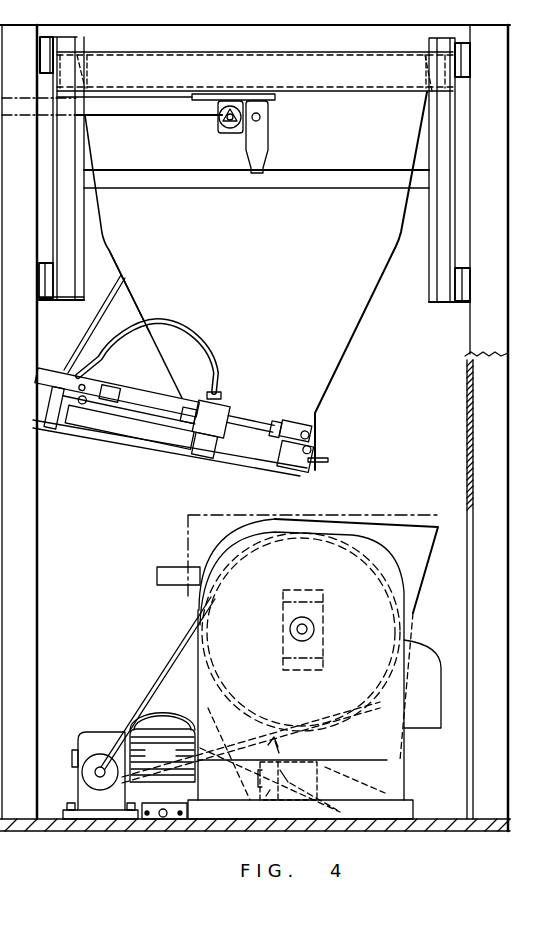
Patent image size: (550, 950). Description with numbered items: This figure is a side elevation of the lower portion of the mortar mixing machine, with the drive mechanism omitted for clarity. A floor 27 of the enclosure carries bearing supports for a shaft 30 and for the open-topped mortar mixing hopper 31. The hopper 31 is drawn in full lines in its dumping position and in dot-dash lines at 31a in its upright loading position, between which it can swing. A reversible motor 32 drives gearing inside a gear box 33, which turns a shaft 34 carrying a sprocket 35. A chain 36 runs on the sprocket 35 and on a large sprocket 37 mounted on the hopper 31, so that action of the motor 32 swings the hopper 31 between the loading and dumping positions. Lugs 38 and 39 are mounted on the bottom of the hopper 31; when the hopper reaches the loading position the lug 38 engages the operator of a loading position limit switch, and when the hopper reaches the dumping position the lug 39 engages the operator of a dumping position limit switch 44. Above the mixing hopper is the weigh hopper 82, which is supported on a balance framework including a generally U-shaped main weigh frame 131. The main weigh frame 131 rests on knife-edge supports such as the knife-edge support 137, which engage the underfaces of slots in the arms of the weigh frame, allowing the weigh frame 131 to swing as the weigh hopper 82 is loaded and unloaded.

The floor 27 is at (45, 822).
The shaft 30 is at (308, 632).
The mortar mixing hopper 31 is at (200, 660).
The loading position of hopper 31a is at (434, 515).
The reversible motor 32 is at (162, 747).
The gear box 33 is at (85, 790).
The shaft 34 is at (88, 735).
The sprocket 35 is at (100, 766).
The chain 36 is at (177, 642).
The large sprocket 37 is at (372, 552).
The lug 38 is at (188, 514).
The lug 39 is at (287, 769).
The dumping position limit switch 44 is at (238, 786).
The weigh hopper 82 is at (320, 362).
The main weigh frame 131 is at (162, 119).
The knife-edge support 137 is at (232, 134).